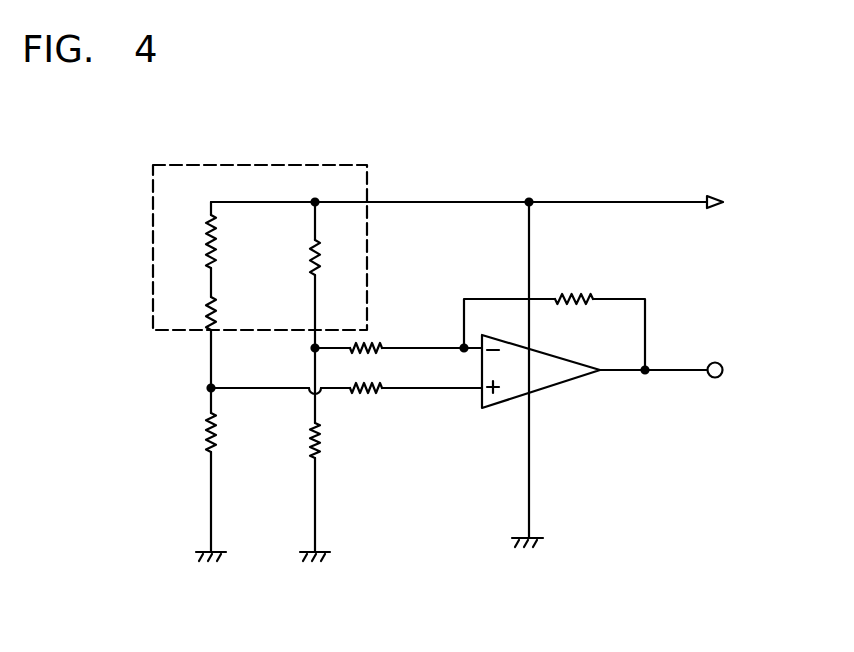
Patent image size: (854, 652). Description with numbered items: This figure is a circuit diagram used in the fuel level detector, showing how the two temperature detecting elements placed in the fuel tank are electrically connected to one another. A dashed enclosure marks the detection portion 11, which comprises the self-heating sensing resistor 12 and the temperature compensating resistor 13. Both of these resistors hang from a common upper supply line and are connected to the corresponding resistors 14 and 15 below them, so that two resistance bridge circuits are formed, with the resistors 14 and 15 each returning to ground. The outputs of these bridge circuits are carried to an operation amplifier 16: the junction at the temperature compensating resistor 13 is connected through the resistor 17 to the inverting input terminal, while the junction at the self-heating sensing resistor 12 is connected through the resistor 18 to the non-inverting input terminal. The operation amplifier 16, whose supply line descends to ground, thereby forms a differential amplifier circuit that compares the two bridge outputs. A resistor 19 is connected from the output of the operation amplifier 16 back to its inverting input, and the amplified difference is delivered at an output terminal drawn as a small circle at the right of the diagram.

The detection portion 11 is at (317, 163).
The self-heating sensing resistor 12 is at (192, 256).
The temperature compensating resistor 13 is at (340, 274).
The resistor 14 is at (203, 447).
The resistor 15 is at (322, 447).
The operation amplifier 16 is at (497, 412).
The resistor 17 is at (382, 340).
The resistor 18 is at (385, 397).
The resistor 19 is at (567, 288).